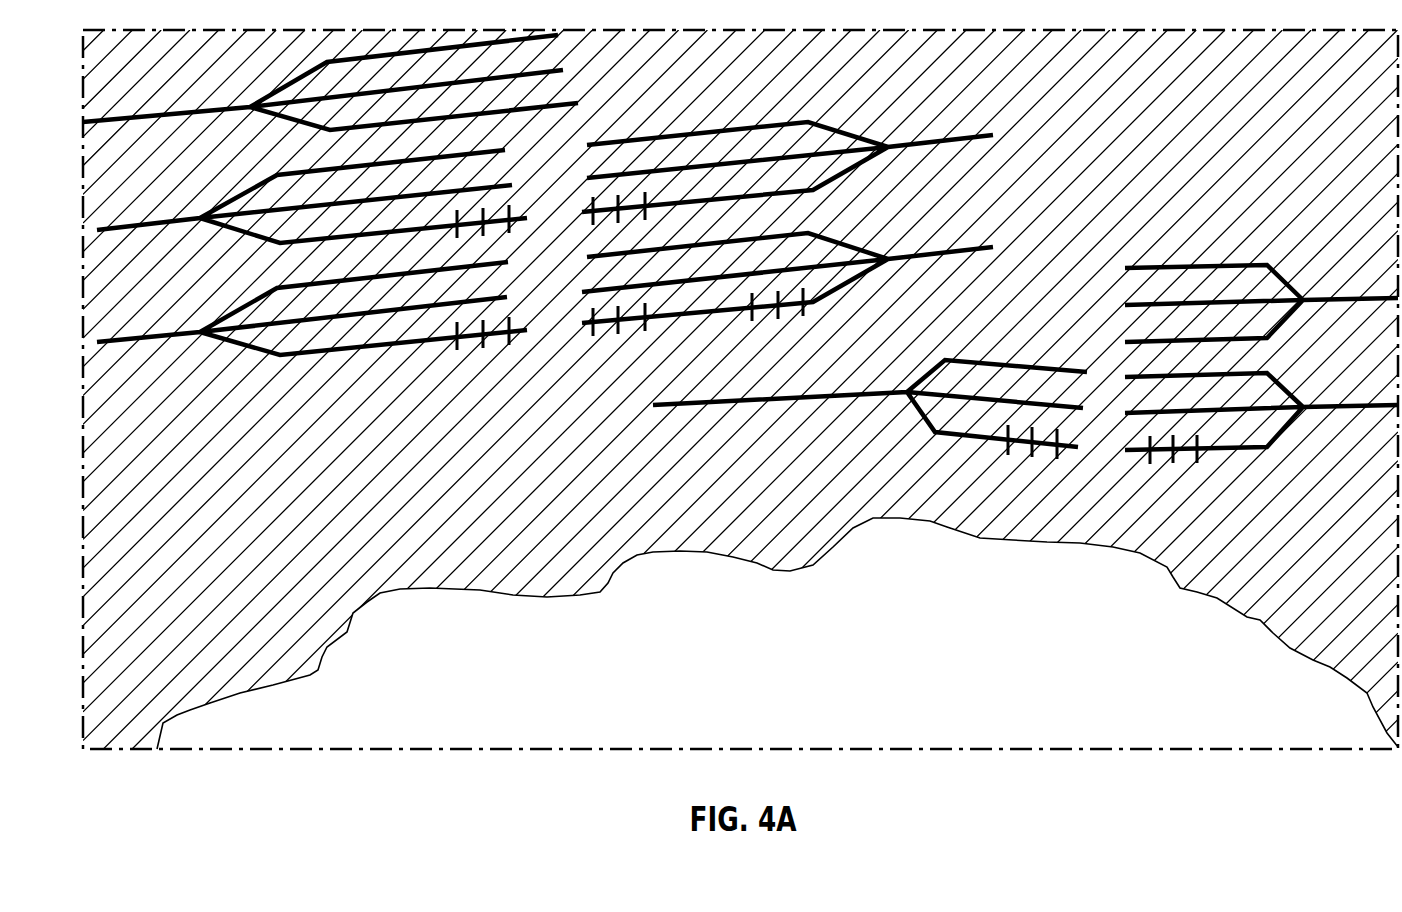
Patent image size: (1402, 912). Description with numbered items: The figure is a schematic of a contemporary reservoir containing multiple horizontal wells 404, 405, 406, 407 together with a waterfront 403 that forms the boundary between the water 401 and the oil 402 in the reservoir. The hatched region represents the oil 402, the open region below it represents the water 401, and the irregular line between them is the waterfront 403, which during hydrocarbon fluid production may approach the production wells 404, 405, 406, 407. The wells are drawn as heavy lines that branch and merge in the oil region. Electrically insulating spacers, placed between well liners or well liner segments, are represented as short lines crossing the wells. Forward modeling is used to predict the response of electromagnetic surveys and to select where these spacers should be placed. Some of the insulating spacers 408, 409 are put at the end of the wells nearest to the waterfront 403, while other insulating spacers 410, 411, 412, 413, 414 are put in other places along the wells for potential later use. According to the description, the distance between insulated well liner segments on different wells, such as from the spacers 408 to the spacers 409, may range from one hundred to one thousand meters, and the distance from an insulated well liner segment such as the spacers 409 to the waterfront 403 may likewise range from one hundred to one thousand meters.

The water 401 is at (1159, 706).
The oil 402 is at (1309, 626).
The waterfront 403 is at (1062, 612).
The horizontal well 404 is at (827, 397).
The horizontal well 405 is at (1330, 410).
The horizontal well 406 is at (158, 333).
The horizontal well 407 is at (947, 250).
The insulating spacers at well end nearest waterfront 408 is at (1032, 456).
The insulating spacers at well end nearest waterfront 409 is at (1197, 463).
The insulating spacers for later use 410 is at (483, 349).
The insulating spacers for later use 411 is at (618, 335).
The insulating spacers for later use 412 is at (484, 212).
The insulating spacers for later use 413 is at (619, 198).
The insulating spacers for later use 414 is at (803, 317).